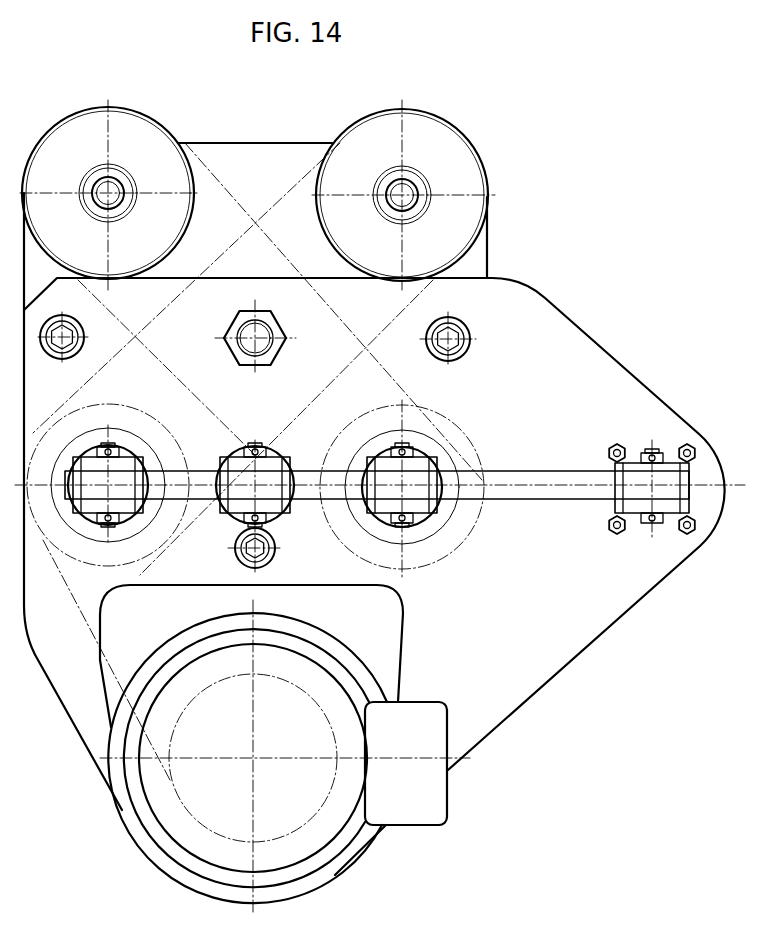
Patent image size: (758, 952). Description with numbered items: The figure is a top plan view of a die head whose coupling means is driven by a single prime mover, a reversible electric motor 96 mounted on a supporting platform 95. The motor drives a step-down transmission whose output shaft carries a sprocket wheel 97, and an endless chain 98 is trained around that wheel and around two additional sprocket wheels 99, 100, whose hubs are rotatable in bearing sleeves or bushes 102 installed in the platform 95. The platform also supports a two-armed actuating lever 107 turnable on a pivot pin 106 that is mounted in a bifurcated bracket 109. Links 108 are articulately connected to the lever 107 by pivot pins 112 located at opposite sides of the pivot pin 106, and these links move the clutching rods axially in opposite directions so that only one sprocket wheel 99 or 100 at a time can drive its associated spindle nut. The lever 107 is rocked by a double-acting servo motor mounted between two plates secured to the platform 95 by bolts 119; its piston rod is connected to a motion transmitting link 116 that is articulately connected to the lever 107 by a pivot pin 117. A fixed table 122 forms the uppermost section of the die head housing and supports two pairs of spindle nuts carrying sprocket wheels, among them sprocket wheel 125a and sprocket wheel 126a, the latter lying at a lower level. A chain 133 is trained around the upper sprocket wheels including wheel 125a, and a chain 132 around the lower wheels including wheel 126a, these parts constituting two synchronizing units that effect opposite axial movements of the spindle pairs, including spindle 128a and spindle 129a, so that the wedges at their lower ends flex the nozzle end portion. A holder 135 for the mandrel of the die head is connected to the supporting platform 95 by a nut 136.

The supporting platform 95 is at (546, 619).
The reversible electric motor 96 is at (420, 815).
The sprocket wheel 97 is at (200, 820).
The endless chain 98 is at (432, 607).
The sprocket wheel 99 is at (80, 563).
The sprocket wheel 100 is at (470, 430).
The bearing sleeves or bushes 102 is at (433, 527).
The pivot pin 106 is at (252, 455).
The two-armed actuating lever 107 is at (527, 478).
The links 108 is at (123, 463).
The bifurcated bracket 109 is at (230, 515).
The pivot pins 112 is at (390, 443).
The motion transmitting link 116 is at (632, 512).
The pivot pin 117 is at (643, 452).
The bolts 119 is at (613, 528).
The fixed table 122 is at (248, 160).
The sprocket wheel 125a is at (315, 207).
The sprocket wheel 126a is at (196, 214).
The spindle 128a is at (388, 183).
The spindle 129a is at (118, 190).
The chain 132 is at (337, 312).
The chain 133 is at (186, 297).
The holder 135 is at (258, 333).
The nut 136 is at (275, 350).